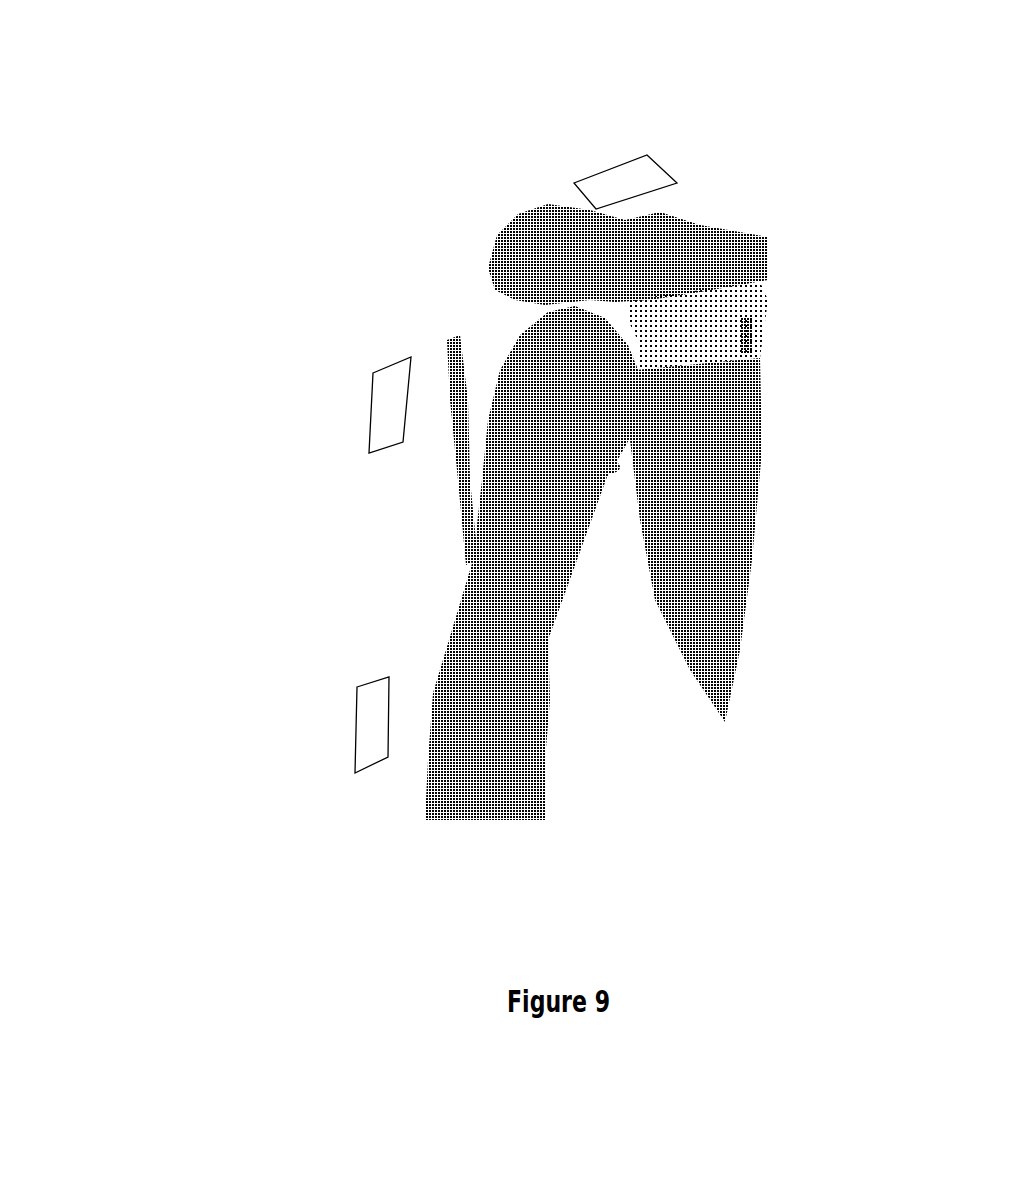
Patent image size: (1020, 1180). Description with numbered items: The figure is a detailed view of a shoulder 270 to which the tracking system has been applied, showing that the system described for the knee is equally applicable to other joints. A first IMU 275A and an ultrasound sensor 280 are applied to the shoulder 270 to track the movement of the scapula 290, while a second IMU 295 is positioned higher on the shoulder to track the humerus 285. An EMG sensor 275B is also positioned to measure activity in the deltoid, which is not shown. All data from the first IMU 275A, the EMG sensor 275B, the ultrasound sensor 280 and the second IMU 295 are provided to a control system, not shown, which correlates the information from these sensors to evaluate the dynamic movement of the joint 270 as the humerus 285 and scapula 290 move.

The shoulder 270 is at (396, 185).
The first IMU 275A is at (214, 742).
The EMG sensor 275B is at (341, 747).
The ultrasound sensor 280 is at (360, 398).
The humerus 285 is at (443, 465).
The scapula 290 is at (678, 256).
The second IMU 295 is at (587, 166).